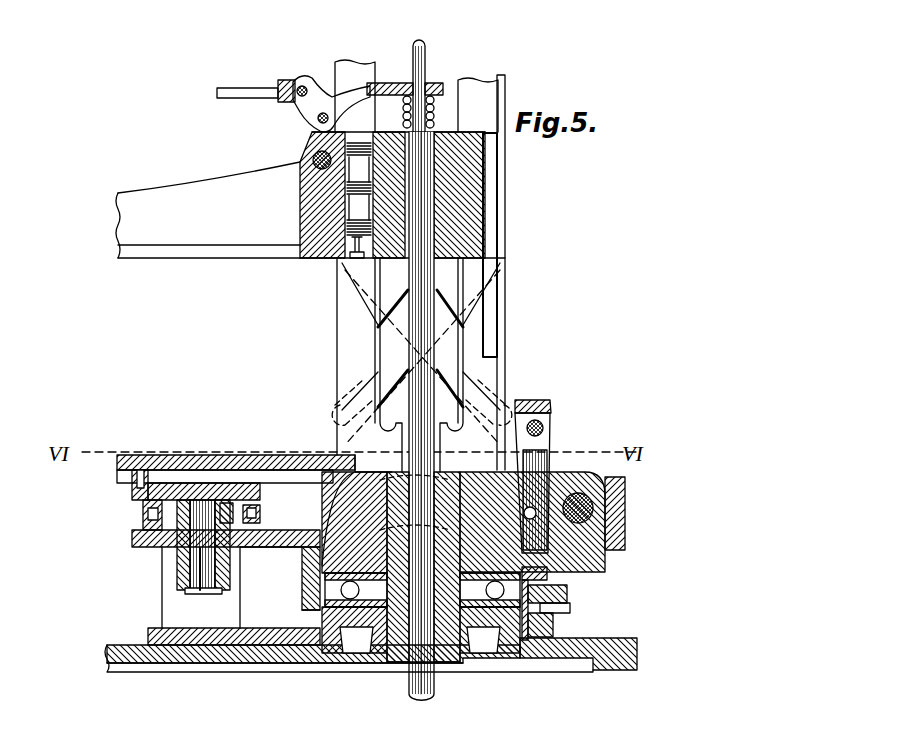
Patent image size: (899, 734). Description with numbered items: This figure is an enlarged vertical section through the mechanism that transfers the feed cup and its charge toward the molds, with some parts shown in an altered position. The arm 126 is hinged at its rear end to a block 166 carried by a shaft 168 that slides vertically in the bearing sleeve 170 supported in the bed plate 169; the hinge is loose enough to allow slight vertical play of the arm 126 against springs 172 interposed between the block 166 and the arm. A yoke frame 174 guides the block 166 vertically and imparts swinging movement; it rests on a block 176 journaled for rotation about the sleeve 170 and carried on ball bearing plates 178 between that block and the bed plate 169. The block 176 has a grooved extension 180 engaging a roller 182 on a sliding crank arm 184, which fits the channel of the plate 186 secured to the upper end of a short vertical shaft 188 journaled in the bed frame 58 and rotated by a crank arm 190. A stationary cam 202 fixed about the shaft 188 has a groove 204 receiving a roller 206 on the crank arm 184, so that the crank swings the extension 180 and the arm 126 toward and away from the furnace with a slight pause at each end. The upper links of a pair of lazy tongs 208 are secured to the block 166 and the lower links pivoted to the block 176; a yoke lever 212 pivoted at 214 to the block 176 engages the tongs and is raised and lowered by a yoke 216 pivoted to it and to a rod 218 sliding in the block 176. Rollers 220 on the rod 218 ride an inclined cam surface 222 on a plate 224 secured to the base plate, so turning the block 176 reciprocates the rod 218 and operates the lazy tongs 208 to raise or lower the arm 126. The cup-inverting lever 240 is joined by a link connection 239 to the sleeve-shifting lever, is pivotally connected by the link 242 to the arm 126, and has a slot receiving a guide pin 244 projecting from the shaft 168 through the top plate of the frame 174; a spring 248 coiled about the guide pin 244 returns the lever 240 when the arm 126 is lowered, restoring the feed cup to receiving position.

The bed frame 58 is at (110, 641).
The arm 126 is at (119, 260).
The block 166 is at (470, 177).
The shaft 168 is at (432, 262).
The bed plate 169 is at (317, 660).
The bearing sleeve 170 is at (437, 662).
The springs 172 is at (313, 160).
The yoke frame 174 is at (483, 103).
The block 176 is at (340, 478).
The ball bearing plates 178 is at (378, 607).
The grooved extension 180 is at (196, 455).
The roller 182 is at (135, 488).
The sliding crank arm 184 is at (150, 505).
The plate 186 is at (205, 497).
The short vertical shaft 188 is at (180, 562).
The crank arm 190 is at (200, 548).
The stationary cam 202 is at (182, 548).
The groove 204 is at (148, 522).
The roller 206 is at (262, 513).
The lazy tongs 208 is at (442, 317).
The yoke lever 212 is at (620, 506).
The pivot 214 is at (562, 482).
The yoke 216 is at (540, 400).
The rod 218 is at (538, 462).
The rollers 220 is at (548, 618).
The inclined cam surface 222 is at (557, 596).
The plate 224 is at (547, 657).
The link connection 239 is at (252, 68).
The lever 240 is at (346, 62).
The link 242 is at (338, 133).
The guide pin 244 is at (424, 44).
The spring 248 is at (428, 110).